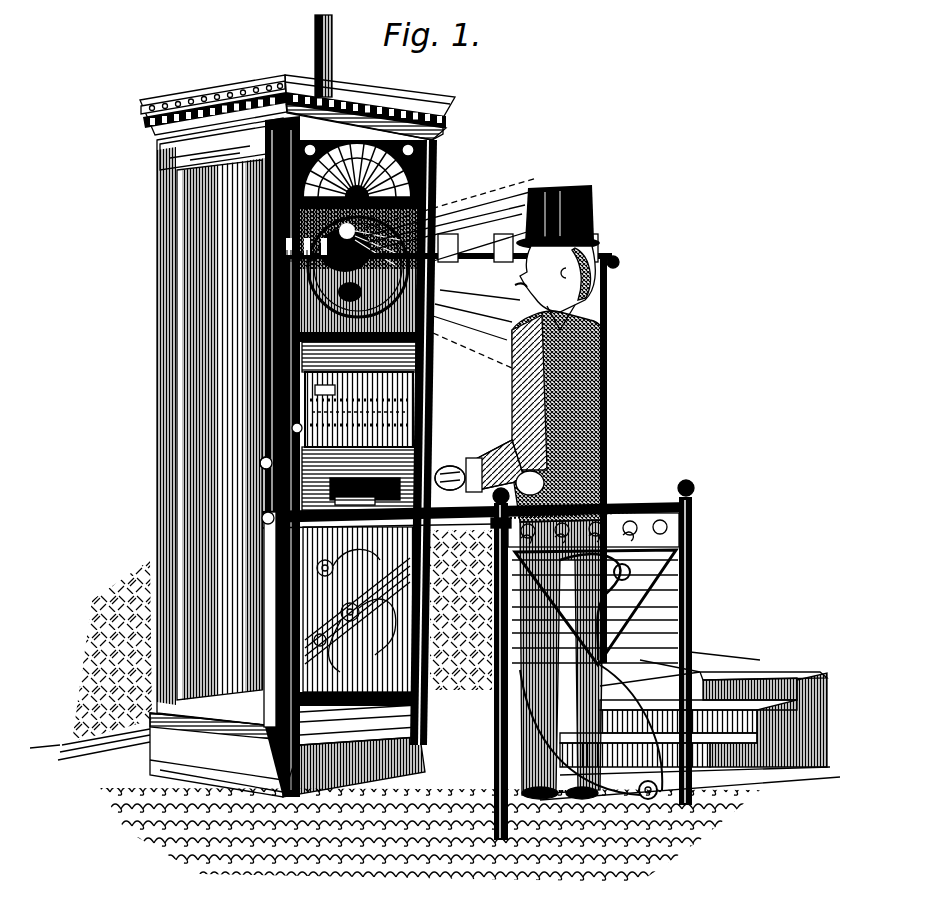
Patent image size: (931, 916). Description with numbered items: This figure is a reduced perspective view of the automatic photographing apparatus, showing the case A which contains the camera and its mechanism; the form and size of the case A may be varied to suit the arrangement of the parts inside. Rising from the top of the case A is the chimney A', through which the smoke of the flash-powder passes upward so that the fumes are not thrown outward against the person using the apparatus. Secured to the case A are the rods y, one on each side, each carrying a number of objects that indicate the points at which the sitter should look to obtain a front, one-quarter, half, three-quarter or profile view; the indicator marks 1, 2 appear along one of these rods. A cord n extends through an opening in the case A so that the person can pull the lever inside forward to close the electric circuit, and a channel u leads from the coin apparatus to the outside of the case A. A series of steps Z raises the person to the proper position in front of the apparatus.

The case A is at (284, 436).
The chimney A' is at (337, 56).
The rods y is at (468, 250).
The indicator box 1 is at (448, 248).
The indicator box 2 is at (503, 248).
The cord n is at (413, 483).
The channel u is at (445, 477).
The steps Z is at (763, 662).